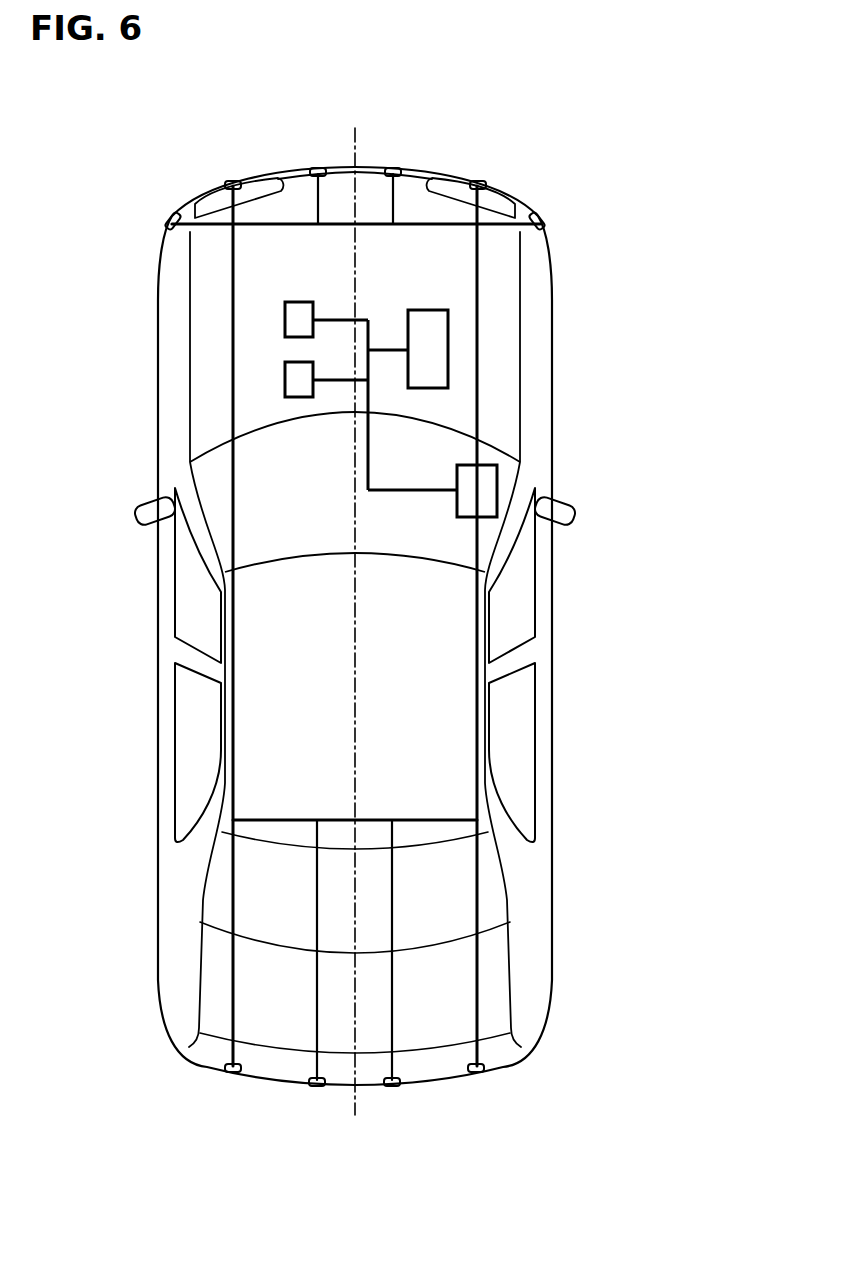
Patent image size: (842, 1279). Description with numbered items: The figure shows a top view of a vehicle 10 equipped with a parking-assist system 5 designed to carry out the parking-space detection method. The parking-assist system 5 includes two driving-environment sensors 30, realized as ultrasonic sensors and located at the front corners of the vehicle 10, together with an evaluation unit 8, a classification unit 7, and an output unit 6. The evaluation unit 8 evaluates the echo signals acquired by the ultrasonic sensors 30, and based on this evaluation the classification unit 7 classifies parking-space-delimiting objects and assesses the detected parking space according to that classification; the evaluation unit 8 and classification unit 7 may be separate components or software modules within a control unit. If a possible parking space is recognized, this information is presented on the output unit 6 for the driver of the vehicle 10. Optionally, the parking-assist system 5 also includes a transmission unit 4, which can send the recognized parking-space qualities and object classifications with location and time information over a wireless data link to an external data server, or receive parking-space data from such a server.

The vehicle 10 is at (580, 160).
The driving-environment sensors 30 is at (165, 216).
The parking-assist system 5 is at (337, 455).
The transmission unit 4 is at (285, 316).
The classification unit 7 is at (285, 377).
The output unit 6 is at (430, 310).
The evaluation unit 8 is at (457, 505).